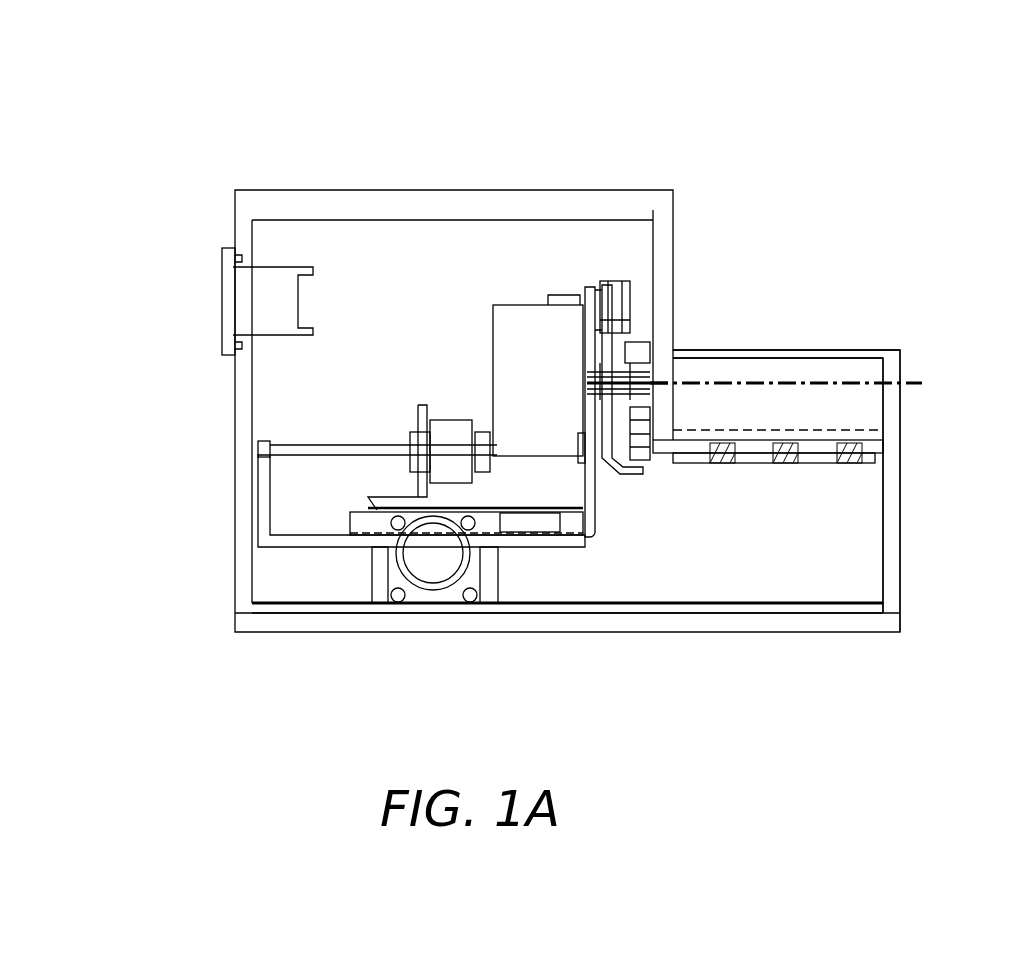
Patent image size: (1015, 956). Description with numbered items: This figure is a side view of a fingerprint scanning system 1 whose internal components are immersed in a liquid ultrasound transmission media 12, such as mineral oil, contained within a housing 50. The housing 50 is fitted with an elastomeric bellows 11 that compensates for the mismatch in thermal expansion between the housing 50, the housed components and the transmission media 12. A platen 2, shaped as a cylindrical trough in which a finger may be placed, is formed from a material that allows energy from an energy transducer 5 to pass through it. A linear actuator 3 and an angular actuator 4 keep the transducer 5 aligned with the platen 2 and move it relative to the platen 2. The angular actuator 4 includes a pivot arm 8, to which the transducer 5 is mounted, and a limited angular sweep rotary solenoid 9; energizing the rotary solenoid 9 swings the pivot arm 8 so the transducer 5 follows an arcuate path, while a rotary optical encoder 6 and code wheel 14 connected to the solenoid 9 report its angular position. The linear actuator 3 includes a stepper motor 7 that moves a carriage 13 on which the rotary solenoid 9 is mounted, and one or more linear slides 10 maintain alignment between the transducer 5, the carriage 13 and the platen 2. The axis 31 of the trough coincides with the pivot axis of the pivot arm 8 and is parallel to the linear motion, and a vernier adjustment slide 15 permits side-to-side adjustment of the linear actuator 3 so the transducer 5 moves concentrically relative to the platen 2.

The system 1 is at (616, 172).
The platen 2 is at (775, 393).
The linear actuator 3 is at (310, 542).
The angular actuator 4 is at (627, 370).
The energy transducer 5 is at (860, 463).
The rotary optical encoder 6 is at (620, 303).
The stepper motor 7 is at (440, 470).
The pivot arm 8 is at (677, 465).
The rotary solenoid 9 is at (570, 382).
The linear slide 10 is at (530, 523).
The elastomeric bellows 11 is at (263, 298).
The liquid ultrasound transmission media 12 is at (280, 243).
The carriage 13 is at (573, 518).
The code wheel 14 is at (623, 467).
The vernier adjustment slide 15 is at (437, 563).
The axis 31 is at (914, 382).
The housing 50 is at (337, 633).